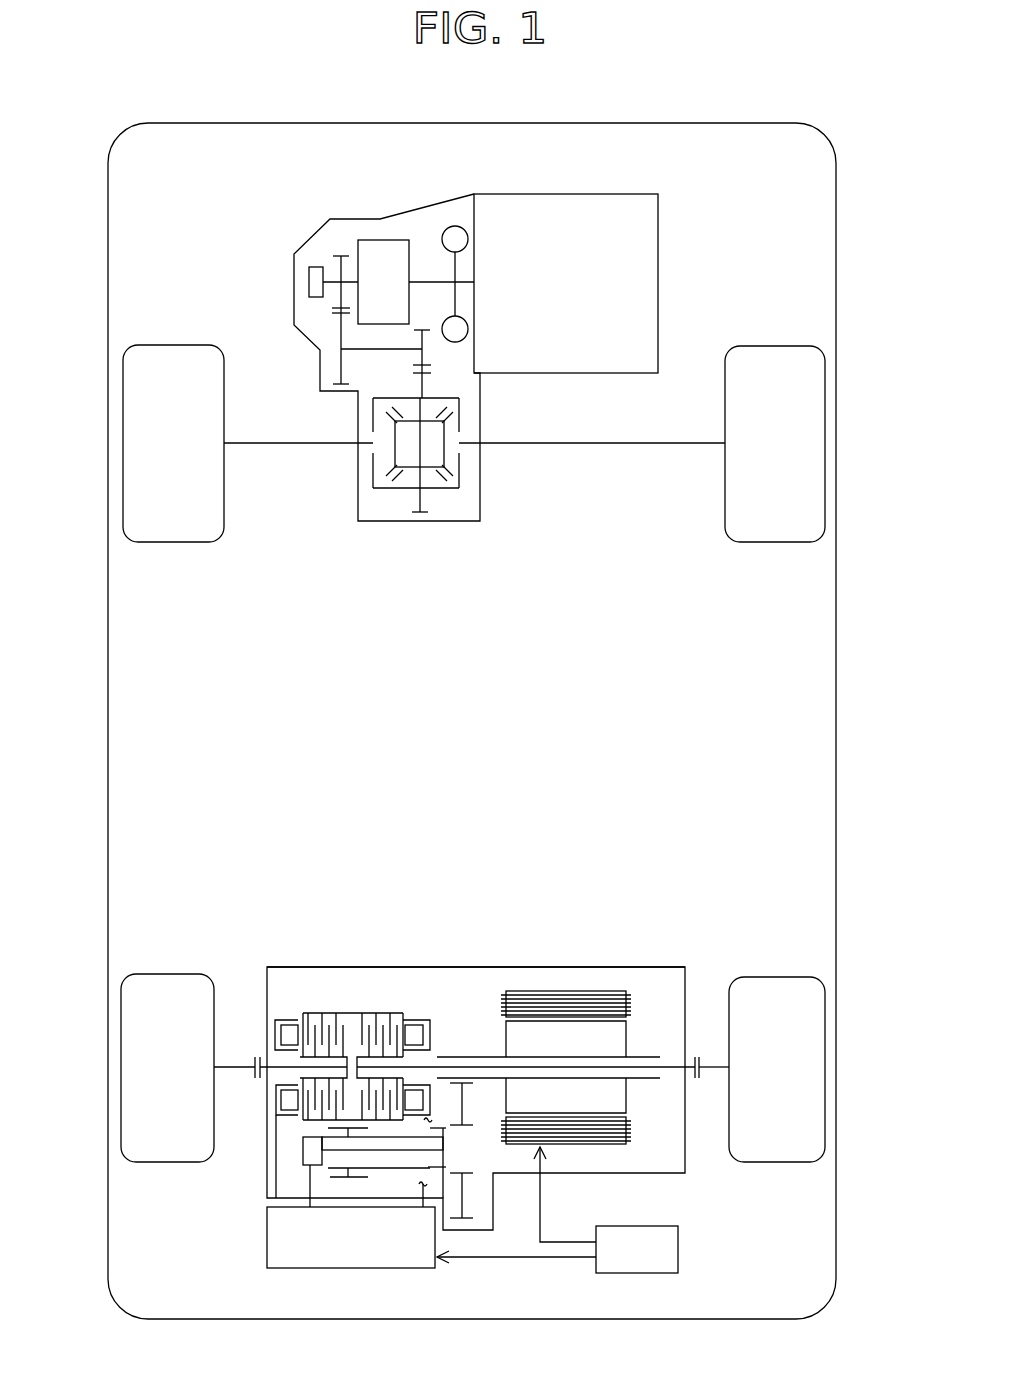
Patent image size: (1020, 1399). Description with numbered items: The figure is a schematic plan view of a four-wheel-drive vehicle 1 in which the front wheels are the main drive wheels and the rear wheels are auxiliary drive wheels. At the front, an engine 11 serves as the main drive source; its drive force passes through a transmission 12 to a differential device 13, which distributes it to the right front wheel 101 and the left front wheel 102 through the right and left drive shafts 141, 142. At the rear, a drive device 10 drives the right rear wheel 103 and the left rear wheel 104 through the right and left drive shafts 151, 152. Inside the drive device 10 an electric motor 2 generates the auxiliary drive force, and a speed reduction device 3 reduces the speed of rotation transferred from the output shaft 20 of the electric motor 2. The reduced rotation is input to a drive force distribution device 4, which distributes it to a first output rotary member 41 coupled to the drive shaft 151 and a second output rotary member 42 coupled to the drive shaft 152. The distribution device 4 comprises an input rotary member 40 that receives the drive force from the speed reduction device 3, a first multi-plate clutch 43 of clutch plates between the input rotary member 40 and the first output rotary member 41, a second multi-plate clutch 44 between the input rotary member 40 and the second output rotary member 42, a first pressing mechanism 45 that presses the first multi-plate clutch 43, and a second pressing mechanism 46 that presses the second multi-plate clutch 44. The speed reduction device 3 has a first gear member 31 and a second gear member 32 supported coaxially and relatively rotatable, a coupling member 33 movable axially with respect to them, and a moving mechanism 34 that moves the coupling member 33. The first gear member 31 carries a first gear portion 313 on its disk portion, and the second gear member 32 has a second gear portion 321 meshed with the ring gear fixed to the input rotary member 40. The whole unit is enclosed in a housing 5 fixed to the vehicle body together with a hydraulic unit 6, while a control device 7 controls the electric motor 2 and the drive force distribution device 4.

The four-wheel-drive vehicle 1 is at (842, 118).
The drive device 10 is at (652, 942).
The engine 11 is at (600, 194).
The transmission 12 is at (362, 232).
The differential device 13 is at (383, 493).
The right drive shaft 141 is at (590, 442).
The left drive shaft 142 is at (313, 442).
The right front wheel 101 is at (826, 442).
The left front wheel 102 is at (122, 445).
The right rear wheel 103 is at (826, 1058).
The left rear wheel 104 is at (121, 1058).
The right drive shaft 151 is at (710, 1065).
The left drive shaft 152 is at (246, 1064).
The electric motor 2 is at (640, 1000).
The output shaft 20 is at (638, 1080).
The speed reduction device 3 is at (388, 1196).
The first gear member 31 is at (468, 1187).
The first gear portion 313 is at (465, 1220).
The second gear member 32 is at (392, 1168).
The second gear portion 321 is at (345, 1173).
The coupling member 33 is at (437, 1172).
The moving mechanism 34 is at (322, 1170).
The drive force distribution device 4 is at (377, 1063).
The input rotary member 40 is at (345, 1024).
The first output rotary member 41 is at (669, 1068).
The second output rotary member 42 is at (272, 1078).
The first multi-plate clutch 43 is at (379, 1015).
The second multi-plate clutch 44 is at (327, 1015).
The first pressing mechanism 45 is at (417, 1013).
The second pressing mechanism 46 is at (290, 1015).
The housing 5 is at (578, 967).
The hydraulic unit 6 is at (267, 1235).
The control device 7 is at (643, 1226).